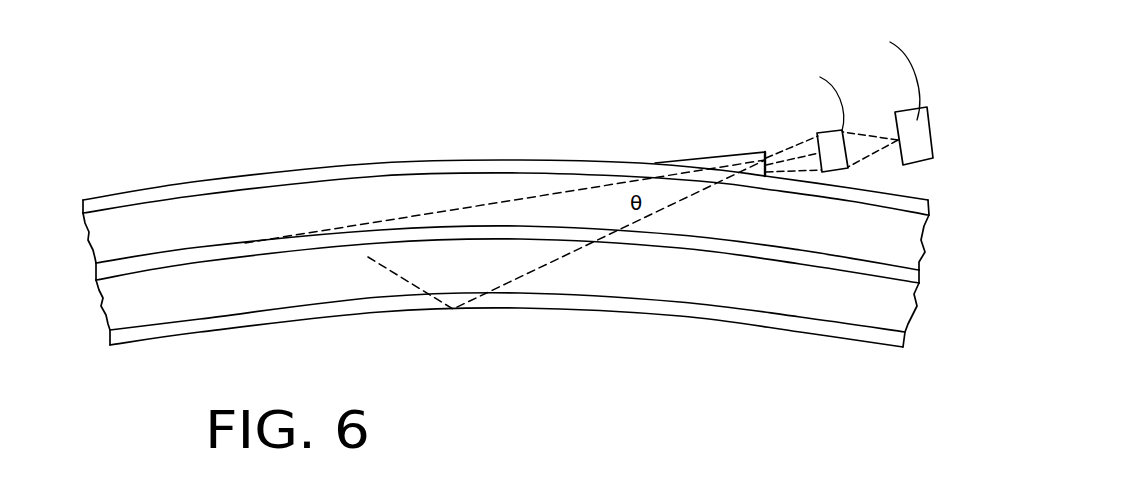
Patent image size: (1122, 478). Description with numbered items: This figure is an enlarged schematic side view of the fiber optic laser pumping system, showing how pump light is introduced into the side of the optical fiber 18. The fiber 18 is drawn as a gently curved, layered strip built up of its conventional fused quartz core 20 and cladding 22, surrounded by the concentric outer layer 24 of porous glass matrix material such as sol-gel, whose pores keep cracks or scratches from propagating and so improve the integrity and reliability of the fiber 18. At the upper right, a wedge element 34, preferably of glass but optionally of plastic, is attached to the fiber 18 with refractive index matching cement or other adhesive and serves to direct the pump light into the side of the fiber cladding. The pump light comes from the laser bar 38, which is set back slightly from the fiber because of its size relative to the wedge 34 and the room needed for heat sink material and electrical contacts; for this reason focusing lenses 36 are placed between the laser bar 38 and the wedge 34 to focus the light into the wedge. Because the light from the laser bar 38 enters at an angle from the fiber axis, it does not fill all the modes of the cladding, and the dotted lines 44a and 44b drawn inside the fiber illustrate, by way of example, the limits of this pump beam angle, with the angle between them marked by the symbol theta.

The optical fiber 18 is at (506, 253).
The core 20 is at (145, 267).
The cladding 22 is at (142, 228).
The outer layer 24 is at (465, 170).
The wedge element 34 is at (732, 153).
The focusing lenses 36 is at (838, 132).
The laser bar 38 is at (912, 117).
The dotted line 44a is at (500, 203).
The dotted line 44b is at (593, 242).